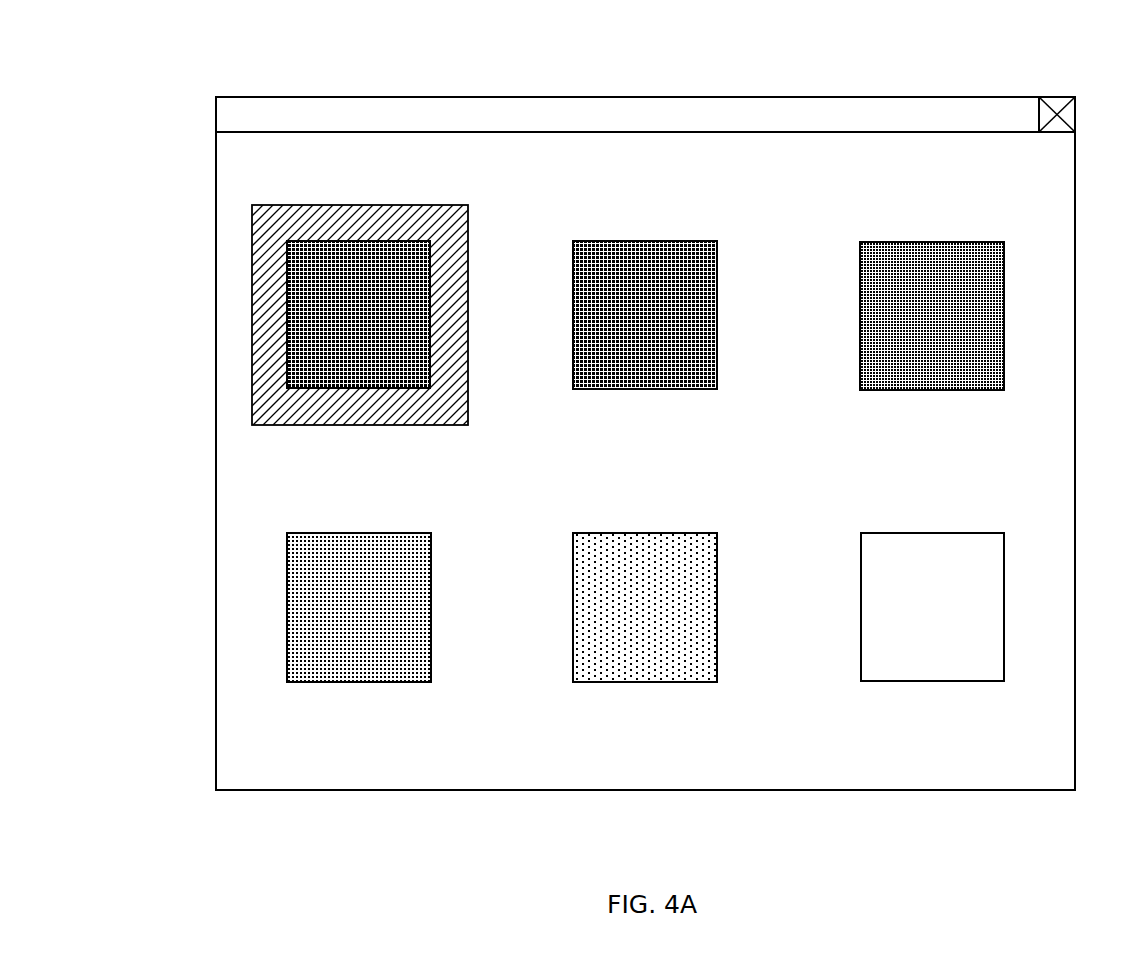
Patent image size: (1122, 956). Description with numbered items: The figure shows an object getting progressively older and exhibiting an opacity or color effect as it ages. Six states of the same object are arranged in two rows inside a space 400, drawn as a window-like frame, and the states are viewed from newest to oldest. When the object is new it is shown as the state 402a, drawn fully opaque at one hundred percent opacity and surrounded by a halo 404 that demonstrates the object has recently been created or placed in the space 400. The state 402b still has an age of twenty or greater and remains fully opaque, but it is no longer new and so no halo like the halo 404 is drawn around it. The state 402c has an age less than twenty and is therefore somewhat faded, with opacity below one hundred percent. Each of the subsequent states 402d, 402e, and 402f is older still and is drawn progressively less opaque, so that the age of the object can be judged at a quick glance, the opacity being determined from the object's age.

The space 400 is at (166, 60).
The halo 404 is at (392, 205).
The state of the object when new 402a is at (350, 241).
The second state of the object 402b is at (643, 241).
The third state of the object 402c is at (903, 242).
The fourth state of the object 402d is at (349, 533).
The fifth state of the object 402e is at (628, 533).
The sixth state of the object 402f is at (912, 533).